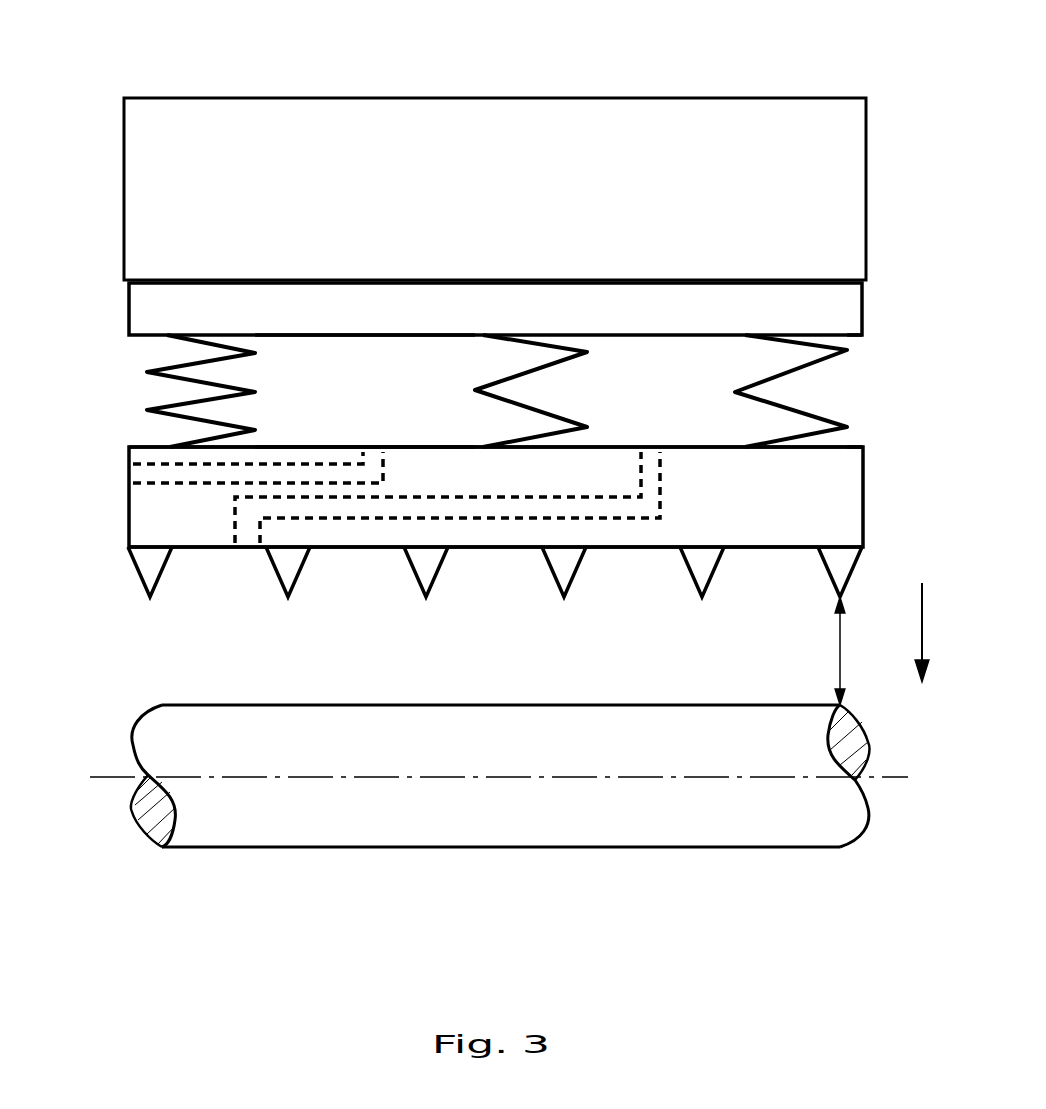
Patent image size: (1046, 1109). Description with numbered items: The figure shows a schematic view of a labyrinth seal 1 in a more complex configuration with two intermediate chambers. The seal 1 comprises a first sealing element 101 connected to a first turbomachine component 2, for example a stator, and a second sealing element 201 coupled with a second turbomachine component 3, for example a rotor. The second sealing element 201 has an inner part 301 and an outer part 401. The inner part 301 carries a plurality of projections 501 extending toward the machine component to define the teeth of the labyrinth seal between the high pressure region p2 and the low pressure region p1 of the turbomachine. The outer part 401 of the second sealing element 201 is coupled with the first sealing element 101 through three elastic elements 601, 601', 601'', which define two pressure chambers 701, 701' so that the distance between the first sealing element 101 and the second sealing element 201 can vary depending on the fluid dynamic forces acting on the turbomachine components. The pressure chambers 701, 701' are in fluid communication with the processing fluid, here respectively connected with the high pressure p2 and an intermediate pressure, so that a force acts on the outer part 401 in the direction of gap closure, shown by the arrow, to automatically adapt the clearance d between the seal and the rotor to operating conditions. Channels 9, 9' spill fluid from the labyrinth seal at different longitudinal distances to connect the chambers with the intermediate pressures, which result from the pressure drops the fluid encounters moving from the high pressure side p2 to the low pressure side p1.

The seal 1 is at (128, 627).
The first turbomachine component 2 is at (445, 123).
The second turbomachine component 3 is at (218, 825).
The channel 9 is at (213, 483).
The channel 9' is at (493, 497).
The first sealing element 101 is at (417, 298).
The second sealing element 201 is at (167, 512).
The inner part 301 is at (618, 548).
The outer part 401 is at (402, 447).
The projections 501 is at (703, 590).
The elastic element 601 is at (149, 379).
The elastic element 601' is at (564, 323).
The elastic element 601'' is at (850, 378).
The pressure chamber 701 is at (365, 323).
The pressure chamber 701' is at (855, 391).
The clearance d is at (849, 651).
The low pressure p1 is at (878, 389).
The high pressure p2 is at (231, 429).